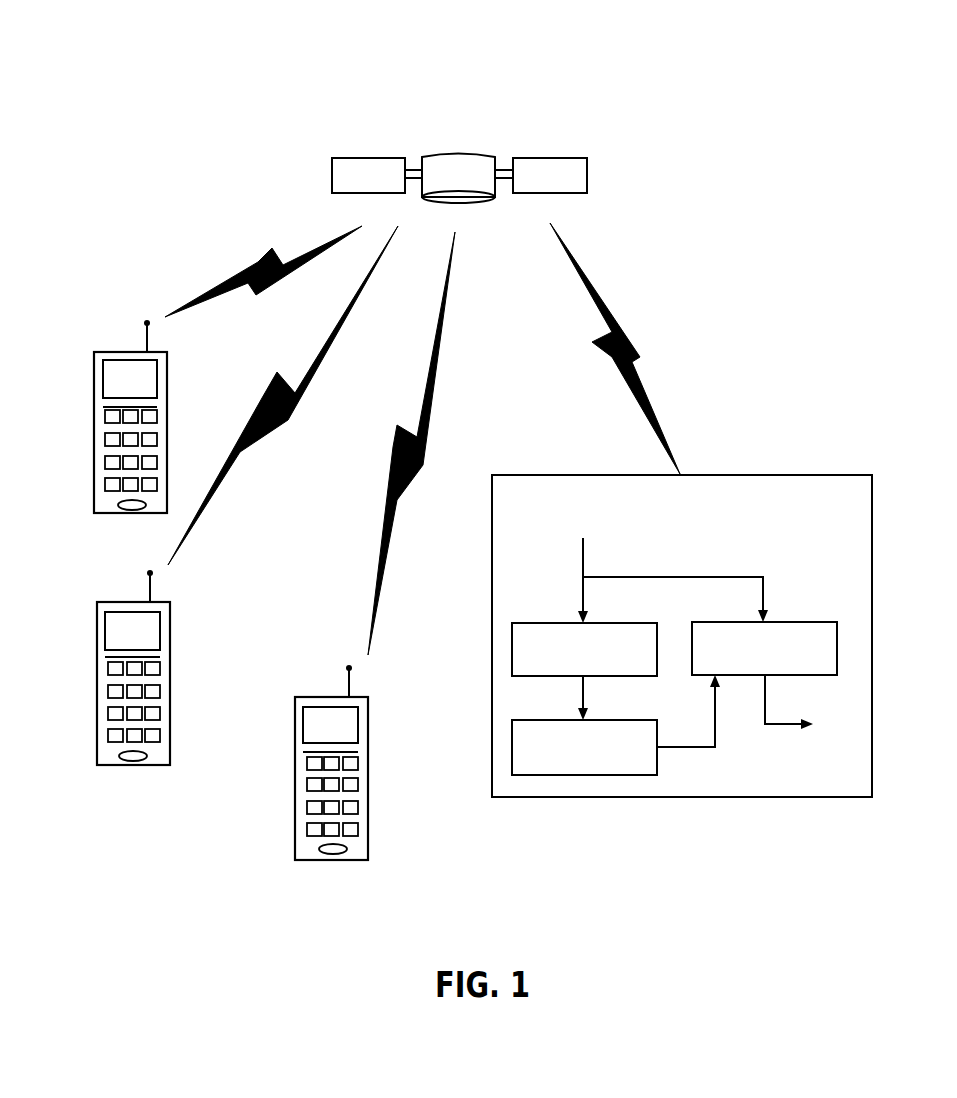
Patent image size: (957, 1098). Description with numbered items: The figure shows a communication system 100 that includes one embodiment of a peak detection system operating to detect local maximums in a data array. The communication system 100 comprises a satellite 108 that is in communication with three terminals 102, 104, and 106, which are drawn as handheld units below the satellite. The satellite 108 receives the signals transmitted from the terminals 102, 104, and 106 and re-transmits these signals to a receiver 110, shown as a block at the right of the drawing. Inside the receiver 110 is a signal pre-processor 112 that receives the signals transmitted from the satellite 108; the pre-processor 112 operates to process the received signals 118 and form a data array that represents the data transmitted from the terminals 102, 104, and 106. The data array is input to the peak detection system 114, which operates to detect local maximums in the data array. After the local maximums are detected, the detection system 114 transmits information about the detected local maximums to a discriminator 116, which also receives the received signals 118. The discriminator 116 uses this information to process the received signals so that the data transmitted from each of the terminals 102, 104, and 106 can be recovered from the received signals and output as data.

The communication system 100 is at (268, 77).
The terminal 102 is at (112, 352).
The terminal 104 is at (112, 602).
The terminal 106 is at (310, 697).
The satellite 108 is at (465, 153).
The receiver 110 is at (742, 475).
The signal pre-processor 112 is at (512, 652).
The peak detection system 114 is at (607, 775).
The discriminator 116 is at (803, 622).
The received signals 118 is at (583, 560).